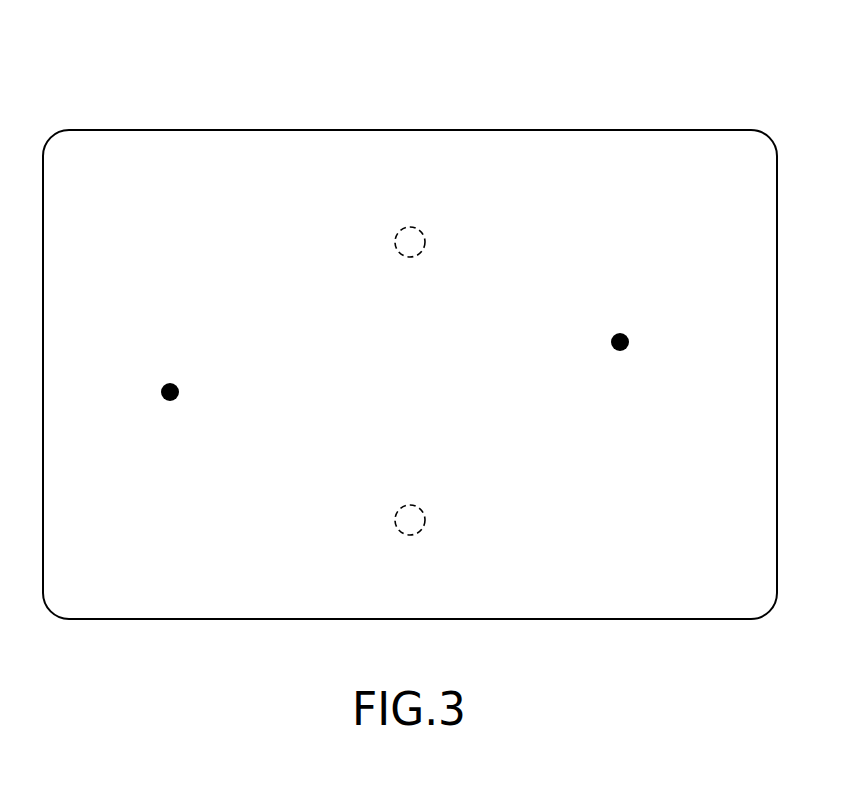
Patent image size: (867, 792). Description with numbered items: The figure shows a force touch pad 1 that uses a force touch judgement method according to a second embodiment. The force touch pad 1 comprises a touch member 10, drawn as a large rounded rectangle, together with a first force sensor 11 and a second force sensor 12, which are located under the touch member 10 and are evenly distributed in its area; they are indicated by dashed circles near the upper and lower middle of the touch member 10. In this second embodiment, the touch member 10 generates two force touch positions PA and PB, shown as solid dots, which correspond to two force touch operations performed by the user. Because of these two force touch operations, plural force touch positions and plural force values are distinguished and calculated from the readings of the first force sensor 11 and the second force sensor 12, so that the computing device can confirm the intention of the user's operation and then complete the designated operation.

The force touch pad 1 is at (212, 52).
The touch member 10 is at (578, 146).
The first force sensor 11 is at (409, 230).
The second force sensor 12 is at (409, 508).
The force touch position PA is at (625, 334).
The force touch position PB is at (176, 384).